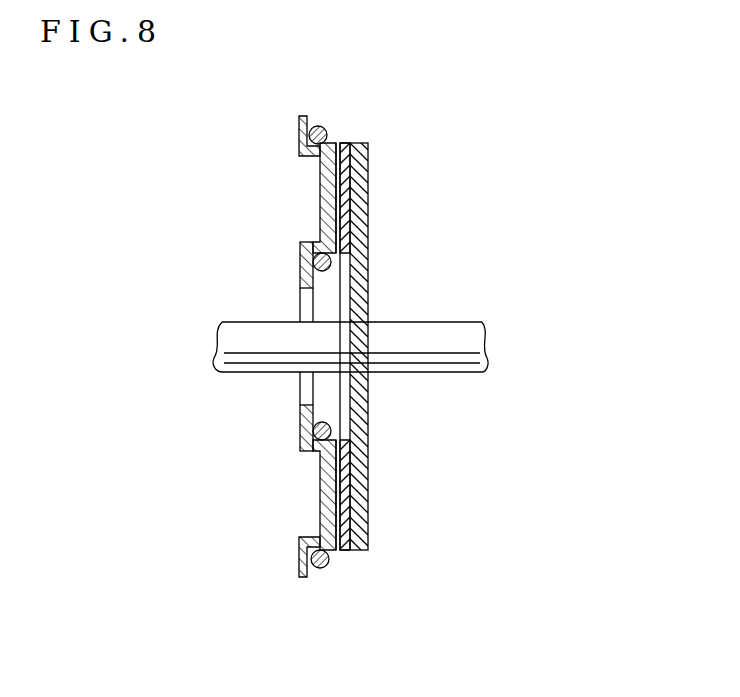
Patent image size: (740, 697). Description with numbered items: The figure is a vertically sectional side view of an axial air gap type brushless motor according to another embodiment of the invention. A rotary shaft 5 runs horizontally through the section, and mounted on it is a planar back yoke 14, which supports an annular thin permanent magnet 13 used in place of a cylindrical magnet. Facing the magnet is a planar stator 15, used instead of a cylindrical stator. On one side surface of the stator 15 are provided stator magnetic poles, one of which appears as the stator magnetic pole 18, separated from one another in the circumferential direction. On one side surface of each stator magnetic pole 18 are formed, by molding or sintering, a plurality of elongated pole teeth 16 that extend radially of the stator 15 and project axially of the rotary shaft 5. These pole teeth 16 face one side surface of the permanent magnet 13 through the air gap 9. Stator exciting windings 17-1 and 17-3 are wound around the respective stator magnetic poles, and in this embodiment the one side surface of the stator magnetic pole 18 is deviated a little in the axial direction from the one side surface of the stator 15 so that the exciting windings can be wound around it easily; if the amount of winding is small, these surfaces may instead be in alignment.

The rotary shaft 5 is at (433, 372).
The air gap 9 is at (338, 142).
The annular thin permanent magnet 13 is at (348, 141).
The planar back yoke 14 is at (362, 213).
The planar stator 15 is at (314, 263).
The elongated pole teeth 16 is at (321, 207).
The stator exciting winding 17-1 is at (327, 126).
The stator exciting winding 17-3 is at (323, 570).
The stator magnetic pole 18 is at (319, 161).